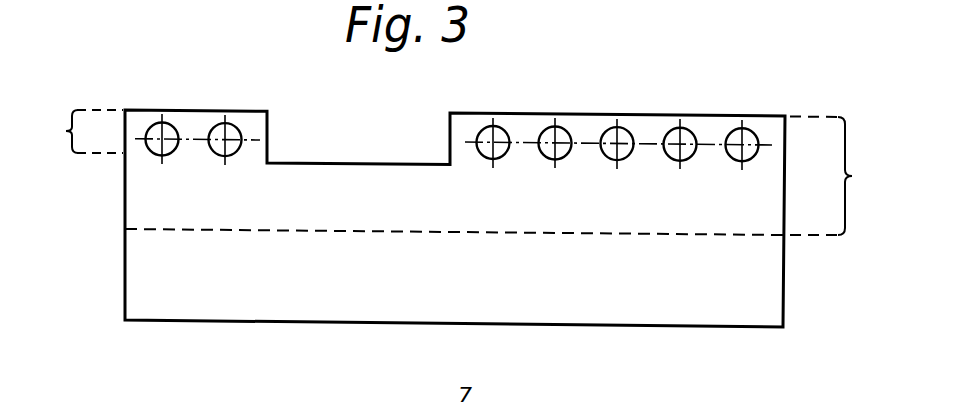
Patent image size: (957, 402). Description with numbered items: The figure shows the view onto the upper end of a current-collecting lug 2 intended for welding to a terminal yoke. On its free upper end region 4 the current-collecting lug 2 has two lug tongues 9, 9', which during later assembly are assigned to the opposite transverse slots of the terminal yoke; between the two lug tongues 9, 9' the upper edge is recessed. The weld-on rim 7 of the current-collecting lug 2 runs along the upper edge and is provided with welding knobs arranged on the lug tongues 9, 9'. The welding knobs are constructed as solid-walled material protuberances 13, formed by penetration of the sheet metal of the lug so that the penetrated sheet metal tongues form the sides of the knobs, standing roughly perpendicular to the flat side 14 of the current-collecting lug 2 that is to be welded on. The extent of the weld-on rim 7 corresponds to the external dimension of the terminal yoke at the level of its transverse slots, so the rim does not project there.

The current-collecting lug 2 is at (116, 275).
The upper end region 4 is at (502, 176).
The weld-on rim 7 is at (84, 131).
The lug tongue 9 is at (555, 111).
The lug tongue 9' is at (194, 105).
The material protuberances 13 is at (730, 133).
The flat side 14 is at (578, 133).